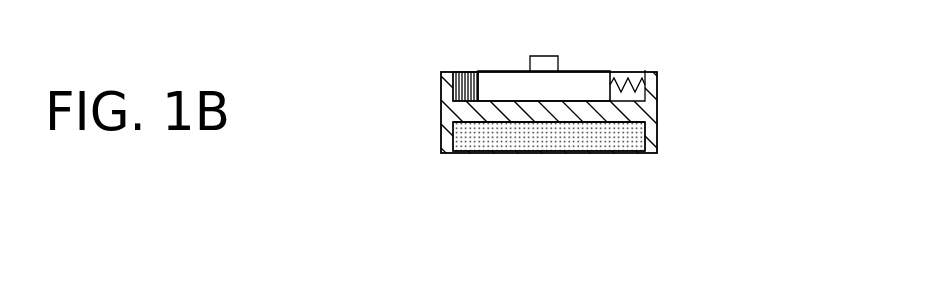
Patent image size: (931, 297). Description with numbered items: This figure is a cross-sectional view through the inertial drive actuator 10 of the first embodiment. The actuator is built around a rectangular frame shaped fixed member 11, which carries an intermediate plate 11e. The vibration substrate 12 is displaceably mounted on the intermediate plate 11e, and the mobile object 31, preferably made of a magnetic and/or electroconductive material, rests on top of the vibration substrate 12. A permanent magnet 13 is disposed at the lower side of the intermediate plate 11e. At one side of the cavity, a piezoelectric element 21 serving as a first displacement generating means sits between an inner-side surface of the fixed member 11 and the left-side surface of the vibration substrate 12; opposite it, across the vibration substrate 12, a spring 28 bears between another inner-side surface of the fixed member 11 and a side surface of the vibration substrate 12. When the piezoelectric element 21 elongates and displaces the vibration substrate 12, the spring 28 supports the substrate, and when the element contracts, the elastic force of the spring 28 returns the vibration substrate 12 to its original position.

The inertial drive actuator 10 is at (564, 287).
The fixed member 11 is at (458, 113).
The intermediate plate 11e is at (515, 110).
The vibration substrate 12 is at (587, 80).
The permanent magnet 13 is at (598, 138).
The piezoelectric element 21 is at (464, 81).
The spring 28 is at (642, 80).
The mobile object 31 is at (530, 62).